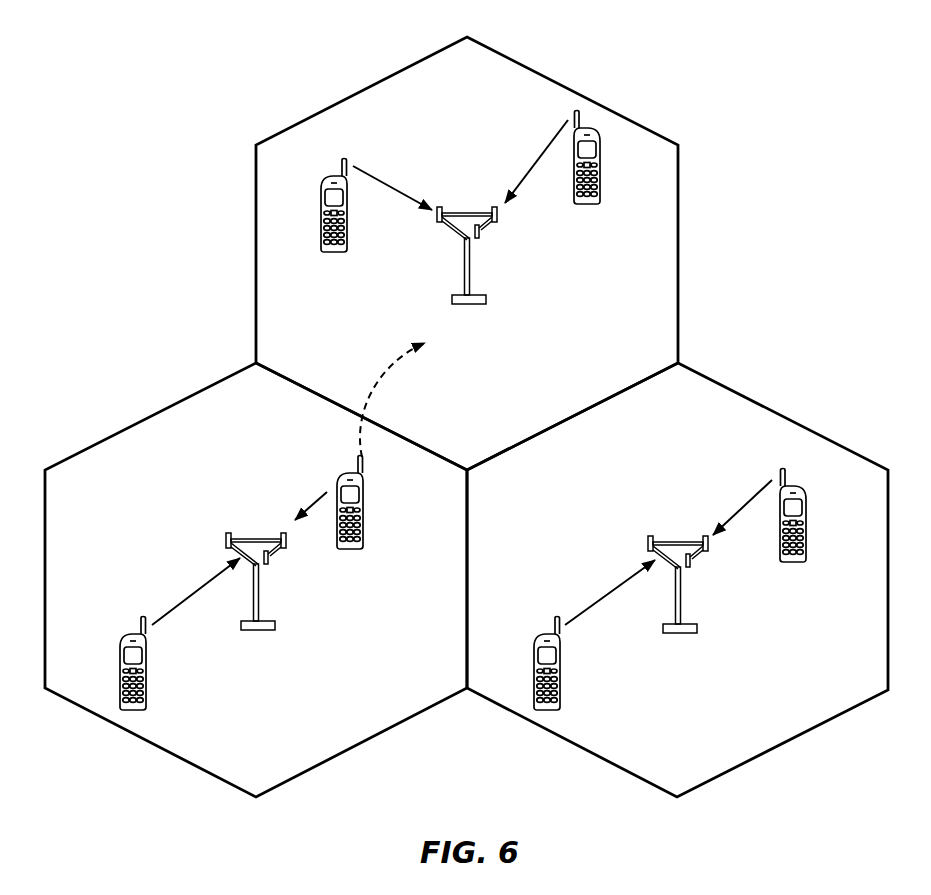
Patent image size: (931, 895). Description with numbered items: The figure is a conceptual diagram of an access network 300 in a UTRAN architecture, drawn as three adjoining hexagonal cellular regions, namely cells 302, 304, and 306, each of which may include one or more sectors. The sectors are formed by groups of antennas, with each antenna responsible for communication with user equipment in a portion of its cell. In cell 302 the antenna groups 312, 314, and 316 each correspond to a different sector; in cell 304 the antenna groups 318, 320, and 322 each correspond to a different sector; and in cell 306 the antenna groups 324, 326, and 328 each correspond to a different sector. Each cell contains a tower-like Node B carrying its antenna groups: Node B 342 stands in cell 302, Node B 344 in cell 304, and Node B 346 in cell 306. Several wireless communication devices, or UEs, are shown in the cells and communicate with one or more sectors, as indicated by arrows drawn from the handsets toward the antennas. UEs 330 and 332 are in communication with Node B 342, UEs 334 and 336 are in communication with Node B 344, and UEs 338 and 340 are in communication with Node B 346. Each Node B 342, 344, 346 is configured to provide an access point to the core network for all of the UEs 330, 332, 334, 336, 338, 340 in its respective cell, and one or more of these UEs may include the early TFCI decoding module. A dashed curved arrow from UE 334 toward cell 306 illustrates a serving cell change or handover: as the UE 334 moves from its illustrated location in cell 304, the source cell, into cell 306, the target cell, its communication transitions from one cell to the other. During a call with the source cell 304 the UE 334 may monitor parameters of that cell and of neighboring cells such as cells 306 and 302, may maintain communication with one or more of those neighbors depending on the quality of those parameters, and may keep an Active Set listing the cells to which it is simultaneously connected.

The access network 300 is at (795, 69).
The cell 302 is at (782, 416).
The cell 304 is at (127, 428).
The cell 306 is at (555, 82).
The antenna group 312 is at (650, 536).
The antenna group 314 is at (690, 568).
The antenna group 316 is at (707, 551).
The antenna group 318 is at (268, 566).
The antenna group 320 is at (285, 549).
The antenna group 322 is at (228, 533).
The antenna group 324 is at (439, 224).
The antenna group 326 is at (480, 240).
The antenna group 328 is at (496, 224).
The UE 330 is at (808, 510).
The UE 332 is at (533, 665).
The UE 334 is at (365, 500).
The UE 336 is at (119, 662).
The UE 338 is at (334, 252).
The UE 340 is at (590, 206).
The Node B 342 is at (680, 562).
The Node B 344 is at (257, 559).
The Node B 346 is at (468, 234).